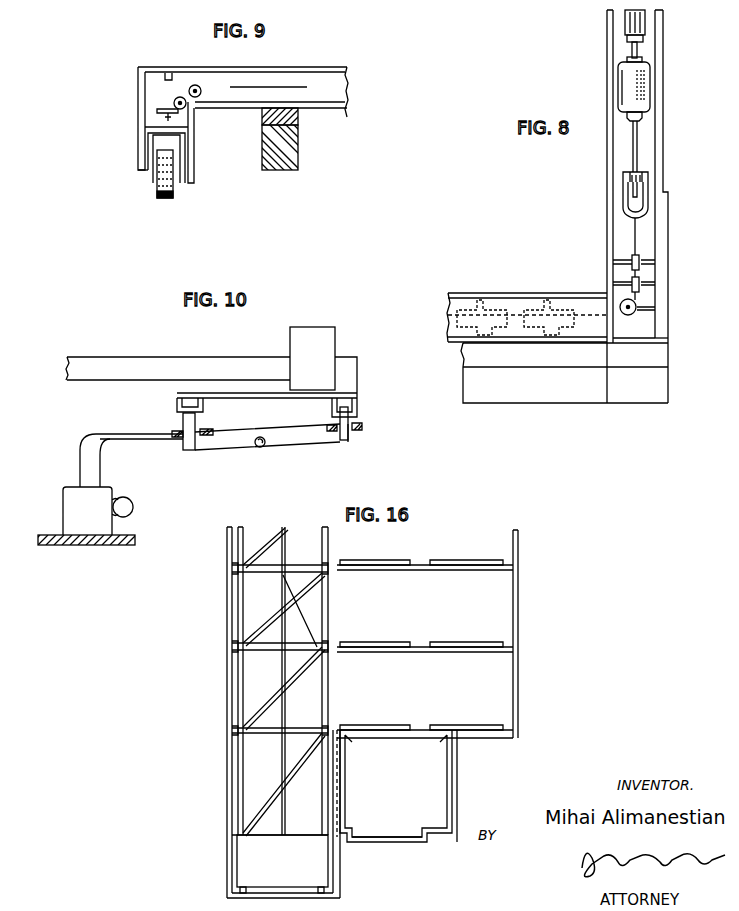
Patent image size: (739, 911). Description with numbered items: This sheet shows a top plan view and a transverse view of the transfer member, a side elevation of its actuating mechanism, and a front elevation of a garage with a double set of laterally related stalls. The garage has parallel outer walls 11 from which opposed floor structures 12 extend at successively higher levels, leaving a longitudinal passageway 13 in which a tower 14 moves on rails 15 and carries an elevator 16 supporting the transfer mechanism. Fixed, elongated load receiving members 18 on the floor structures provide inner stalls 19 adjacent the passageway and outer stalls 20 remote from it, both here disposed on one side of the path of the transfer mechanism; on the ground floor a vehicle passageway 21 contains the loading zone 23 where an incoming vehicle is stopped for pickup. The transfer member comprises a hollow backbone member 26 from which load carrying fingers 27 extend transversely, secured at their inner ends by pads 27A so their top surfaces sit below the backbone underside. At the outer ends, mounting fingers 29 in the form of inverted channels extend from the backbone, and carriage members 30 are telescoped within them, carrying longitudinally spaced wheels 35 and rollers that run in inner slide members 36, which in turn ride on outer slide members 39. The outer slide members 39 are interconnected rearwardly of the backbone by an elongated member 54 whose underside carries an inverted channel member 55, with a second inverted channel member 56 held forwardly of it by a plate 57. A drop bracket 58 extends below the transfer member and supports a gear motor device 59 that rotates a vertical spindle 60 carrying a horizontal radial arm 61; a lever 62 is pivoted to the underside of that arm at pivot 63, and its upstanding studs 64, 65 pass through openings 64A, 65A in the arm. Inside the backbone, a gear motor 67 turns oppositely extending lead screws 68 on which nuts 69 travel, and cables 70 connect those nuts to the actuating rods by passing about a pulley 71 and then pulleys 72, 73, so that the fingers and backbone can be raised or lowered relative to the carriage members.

In FIG. 16, the outer walls 11 is at (227, 672).
In FIG. 16, the floor structures 12 is at (422, 654).
In FIG. 16, the longitudinal passageway 13 is at (233, 783).
In FIG. 16, the tower 14 is at (305, 830).
In FIG. 16, the rails 15 is at (237, 888).
In FIG. 16, the elevator 16 is at (258, 612).
In FIG. 16, the load receiving members 18 is at (452, 561).
In FIG. 16, the inner stalls 19 is at (356, 561).
In FIG. 16, the outer stalls 20 is at (457, 537).
In FIG. 16, the vehicle passageway 21 is at (407, 783).
In FIG. 16, the loading zone 23 is at (382, 835).
In FIG. 9, the backbone member 26 is at (333, 67).
In FIG. 8, the backbone member 26 is at (665, 120).
In FIG. 10, the backbone member 26 is at (322, 337).
In FIG. 9, the load carrying fingers 27 is at (278, 170).
In FIG. 10, the load carrying fingers 27 is at (187, 357).
In FIG. 9, the pads 27A is at (298, 117).
In FIG. 9, the mounting fingers 29 is at (138, 80).
In FIG. 8, the mounting fingers 29 is at (530, 293).
In FIG. 9, the carriage members 30 is at (138, 173).
In FIG. 9, the wheels 35 is at (168, 192).
In FIG. 8, the wheels 35 is at (465, 292).
In FIG. 8, the inner slide members 36 is at (478, 355).
In FIG. 8, the outer slide members 39 is at (627, 393).
In FIG. 8, the elongated member 54 is at (668, 272).
In FIG. 10, the elongated member 54 is at (348, 373).
In FIG. 10, the inverted channel member 55 is at (357, 409).
In FIG. 10, the second inverted channel member 56 is at (177, 405).
In FIG. 10, the plate 57 is at (267, 403).
In FIG. 10, the drop bracket 58 is at (95, 546).
In FIG. 10, the gear motor device 59 is at (68, 512).
In FIG. 10, the vertical spindle 60 is at (80, 465).
In FIG. 10, the radial arm 61 is at (100, 430).
In FIG. 10, the lever 62 is at (237, 450).
In FIG. 8, the pivot 63 is at (637, 150).
In FIG. 10, the pivot 63 is at (265, 445).
In FIG. 10, the upstanding stud 64 is at (360, 423).
In FIG. 10, the opening 64A is at (352, 431).
In FIG. 10, the upstanding stud 65 is at (183, 430).
In FIG. 10, the opening 65A is at (178, 439).
In FIG. 8, the gear motor 67 is at (631, 87).
In FIG. 8, the lead screws 68 is at (632, 46).
In FIG. 8, the nuts 69 is at (628, 35).
In FIG. 9, the cables 70 is at (277, 86).
In FIG. 8, the cables 70 is at (635, 236).
In FIG. 9, the pulley 71 is at (157, 110).
In FIG. 8, the pulley 71 is at (637, 310).
In FIG. 9, the pulley 72 is at (174, 100).
In FIG. 8, the pulley 72 is at (642, 288).
In FIG. 9, the pulley 73 is at (197, 85).
In FIG. 8, the pulley 73 is at (642, 262).